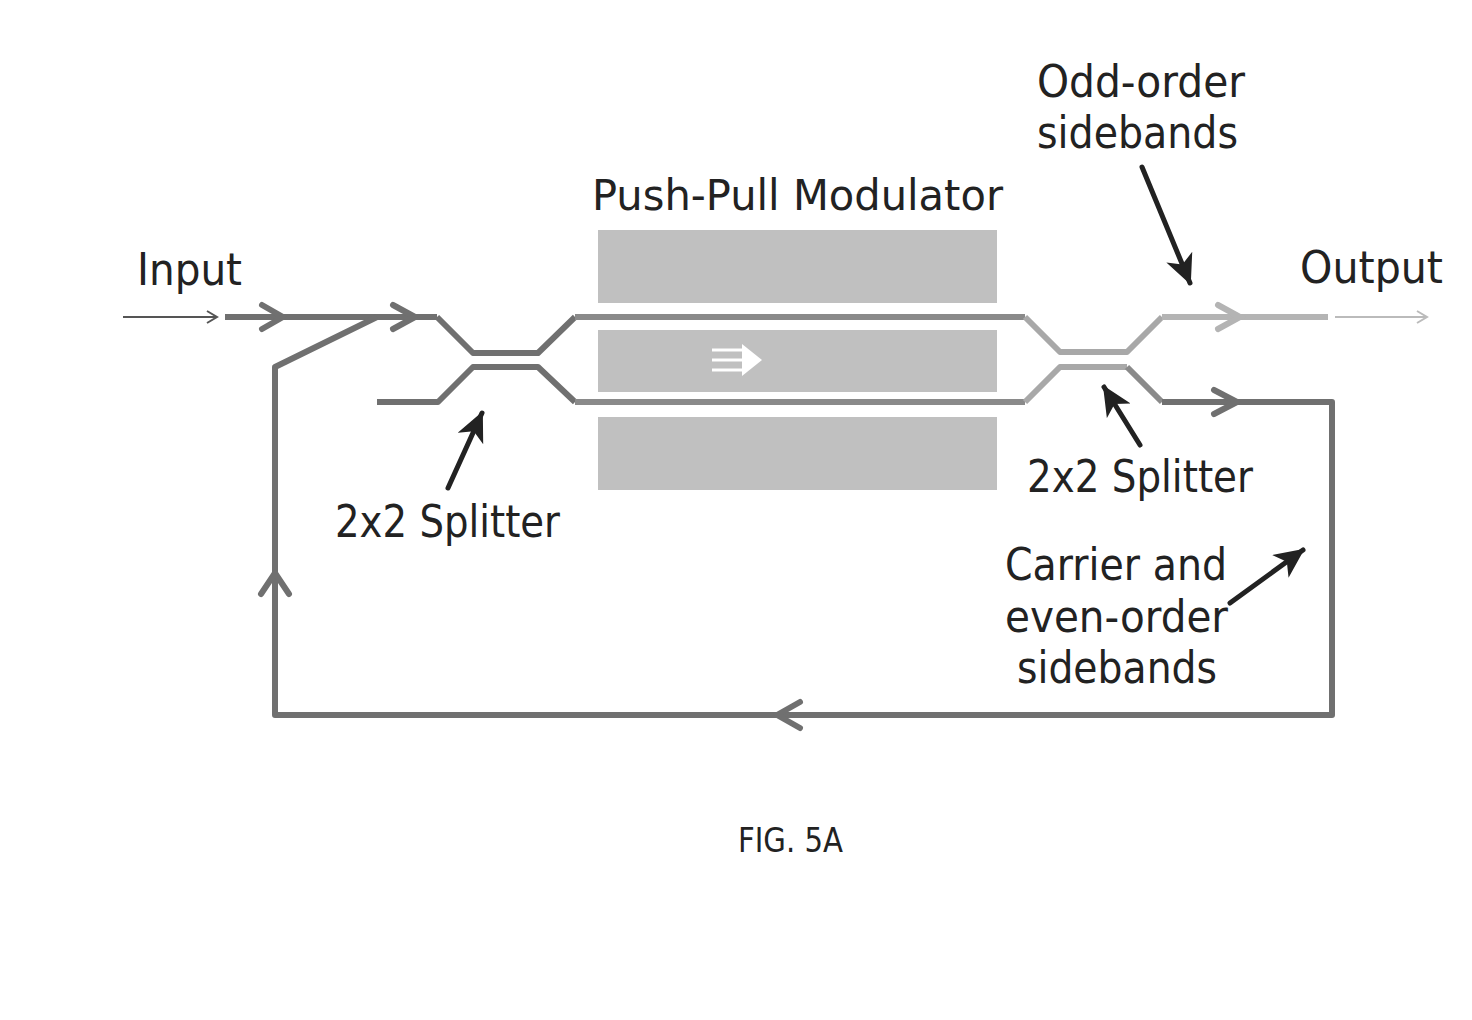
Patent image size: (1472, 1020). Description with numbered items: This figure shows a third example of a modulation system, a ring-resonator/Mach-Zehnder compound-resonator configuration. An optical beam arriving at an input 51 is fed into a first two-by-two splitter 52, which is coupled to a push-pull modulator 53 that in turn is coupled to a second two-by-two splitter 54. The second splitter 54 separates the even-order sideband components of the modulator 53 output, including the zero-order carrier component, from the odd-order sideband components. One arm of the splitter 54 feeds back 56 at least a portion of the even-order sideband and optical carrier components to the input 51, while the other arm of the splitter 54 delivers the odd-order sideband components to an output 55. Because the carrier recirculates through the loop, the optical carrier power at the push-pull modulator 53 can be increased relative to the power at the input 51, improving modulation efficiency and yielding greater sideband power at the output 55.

The input 51 is at (307, 312).
The first 2×2 splitter 52 is at (497, 352).
The push-pull modulator 53 is at (987, 500).
The second 2×2 splitter 54 is at (1100, 350).
The output 55 is at (1260, 317).
The feedback 56 is at (873, 718).